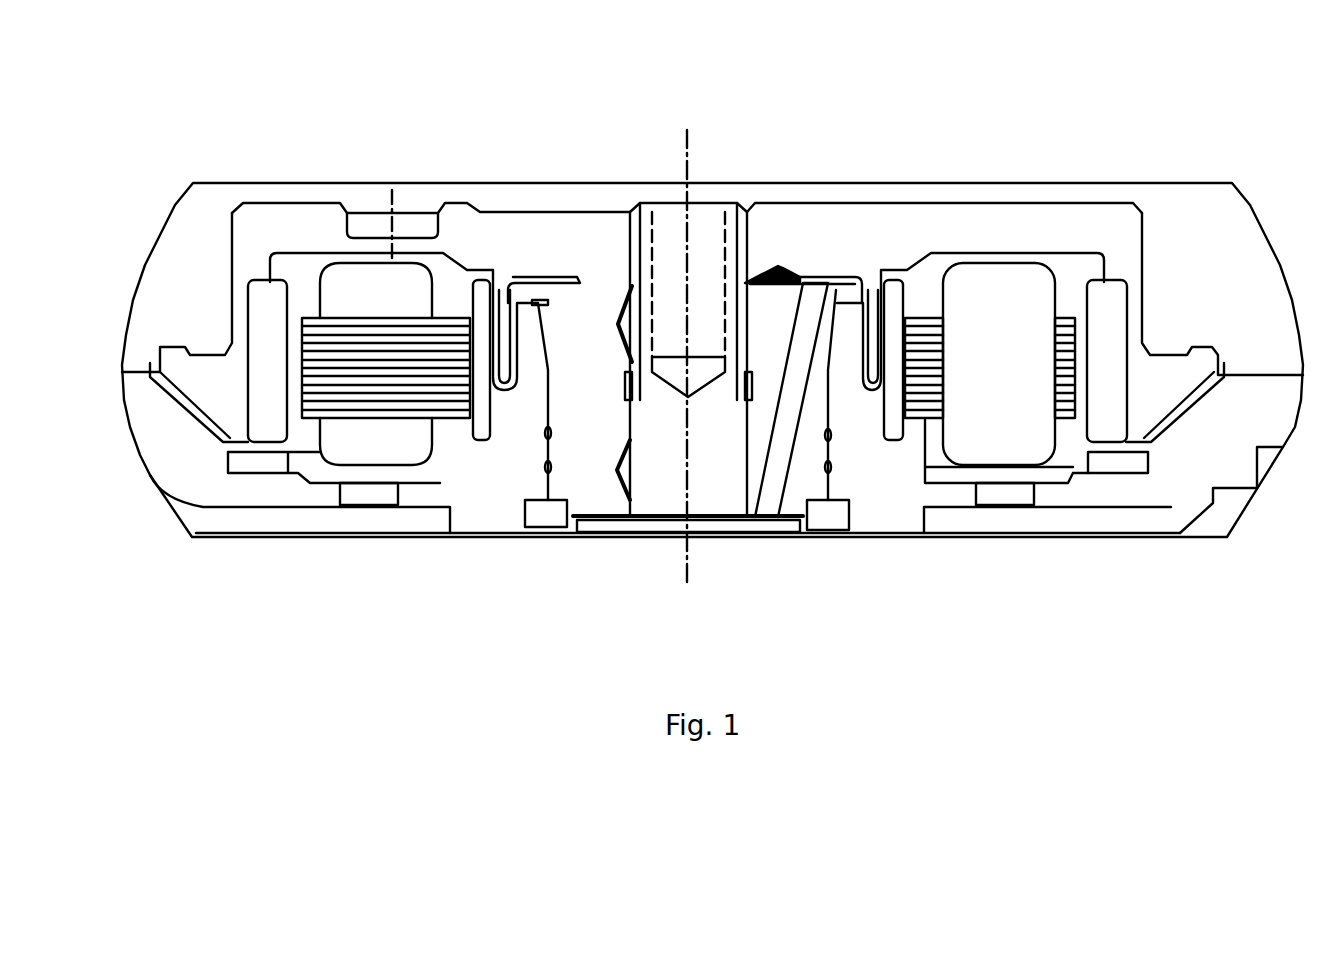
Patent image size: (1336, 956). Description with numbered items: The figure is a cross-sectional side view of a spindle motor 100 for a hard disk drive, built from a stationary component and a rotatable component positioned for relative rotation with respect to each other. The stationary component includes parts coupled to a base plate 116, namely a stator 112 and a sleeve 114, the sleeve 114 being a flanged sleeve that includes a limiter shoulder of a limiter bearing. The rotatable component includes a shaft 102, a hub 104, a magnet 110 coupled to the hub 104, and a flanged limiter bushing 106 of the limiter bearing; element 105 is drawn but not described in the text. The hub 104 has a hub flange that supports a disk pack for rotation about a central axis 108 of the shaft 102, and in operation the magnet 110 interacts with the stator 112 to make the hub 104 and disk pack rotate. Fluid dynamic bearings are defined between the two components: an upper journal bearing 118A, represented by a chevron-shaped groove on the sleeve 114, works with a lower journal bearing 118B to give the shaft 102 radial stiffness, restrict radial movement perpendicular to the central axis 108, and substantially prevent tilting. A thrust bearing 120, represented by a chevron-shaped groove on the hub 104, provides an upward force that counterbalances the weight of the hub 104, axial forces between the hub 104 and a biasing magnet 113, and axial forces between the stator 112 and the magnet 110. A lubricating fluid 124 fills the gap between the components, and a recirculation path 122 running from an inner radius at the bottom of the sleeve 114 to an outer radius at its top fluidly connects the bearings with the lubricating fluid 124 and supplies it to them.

The spindle motor 100 is at (1183, 142).
The shaft 102 is at (707, 457).
The hub 104 is at (995, 233).
The terminal pin 105 is at (507, 337).
The limiter bushing 106 is at (527, 307).
The central axis 108 is at (687, 150).
The magnet 110 is at (258, 308).
The stator 112 is at (360, 448).
The biasing magnet 113 is at (1128, 463).
The sleeve 114 is at (597, 415).
The base plate 116 is at (472, 460).
The journal bearing 118A is at (627, 303).
The lower journal bearing 118B is at (627, 467).
The thrust bearing 120 is at (785, 268).
The recirculation path 122 is at (783, 437).
The lubricating fluid 124 is at (757, 518).